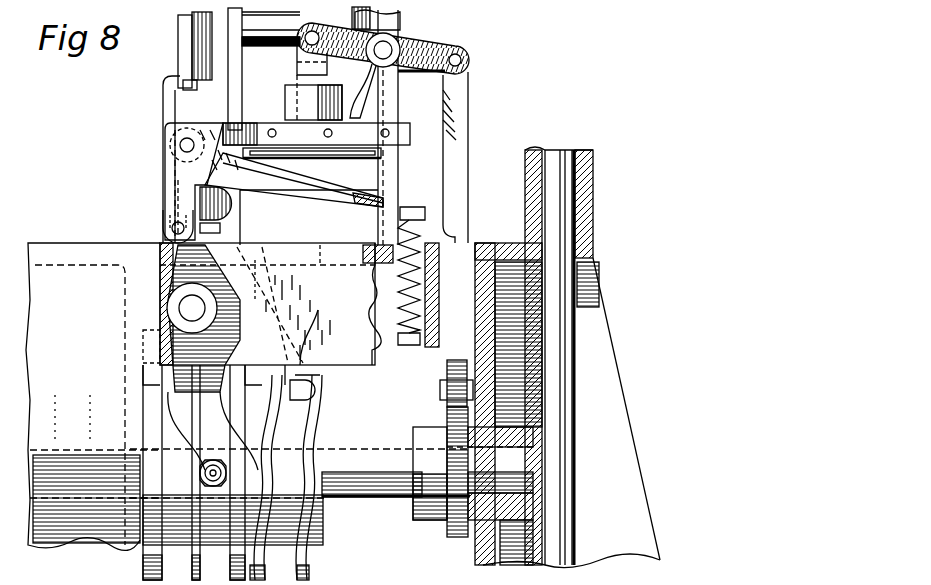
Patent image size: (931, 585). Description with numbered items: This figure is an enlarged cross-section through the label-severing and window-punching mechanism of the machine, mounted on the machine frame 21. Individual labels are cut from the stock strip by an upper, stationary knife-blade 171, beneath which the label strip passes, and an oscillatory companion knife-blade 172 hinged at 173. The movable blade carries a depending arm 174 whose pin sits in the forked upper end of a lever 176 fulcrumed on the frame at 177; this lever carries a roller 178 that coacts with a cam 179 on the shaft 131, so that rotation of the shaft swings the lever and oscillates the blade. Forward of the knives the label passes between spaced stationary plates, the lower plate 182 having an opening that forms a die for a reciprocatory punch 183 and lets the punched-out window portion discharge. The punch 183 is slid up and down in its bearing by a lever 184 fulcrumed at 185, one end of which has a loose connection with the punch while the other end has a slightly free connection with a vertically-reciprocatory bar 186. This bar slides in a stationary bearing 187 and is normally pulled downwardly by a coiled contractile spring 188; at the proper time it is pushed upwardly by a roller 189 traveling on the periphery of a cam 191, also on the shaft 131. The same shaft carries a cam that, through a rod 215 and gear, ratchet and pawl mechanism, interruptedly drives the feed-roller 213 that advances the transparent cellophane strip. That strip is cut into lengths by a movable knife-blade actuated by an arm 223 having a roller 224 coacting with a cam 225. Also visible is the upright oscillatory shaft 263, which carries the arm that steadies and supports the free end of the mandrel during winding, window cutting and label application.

The machine frame 21 is at (62, 255).
The shaft 131 is at (372, 458).
The upper stationary knife-blade 171 is at (389, 134).
The oscillatory companion knife-blade 172 is at (356, 202).
The hinge 173 is at (178, 150).
The depending arm 174 is at (168, 192).
The lever 176 is at (165, 280).
The fulcrum 177 is at (182, 310).
The roller 178 is at (193, 480).
The cam 179 is at (212, 540).
The lower stationary plate 182 is at (370, 168).
The reciprocatory punch 183 is at (300, 76).
The lever 184 is at (422, 42).
The fulcrum 185 is at (388, 56).
The vertically-reciprocatory bar 186 is at (462, 190).
The stationary bearing 187 is at (432, 344).
The coiled contractile spring 188 is at (405, 292).
The roller 189 is at (445, 410).
The cam 191 is at (447, 530).
The feed-roller 213 is at (292, 46).
The rod 215 is at (165, 109).
The arm 223 is at (272, 290).
The roller 224 is at (313, 330).
The cam 225 is at (286, 477).
The upright shaft 263 is at (566, 497).